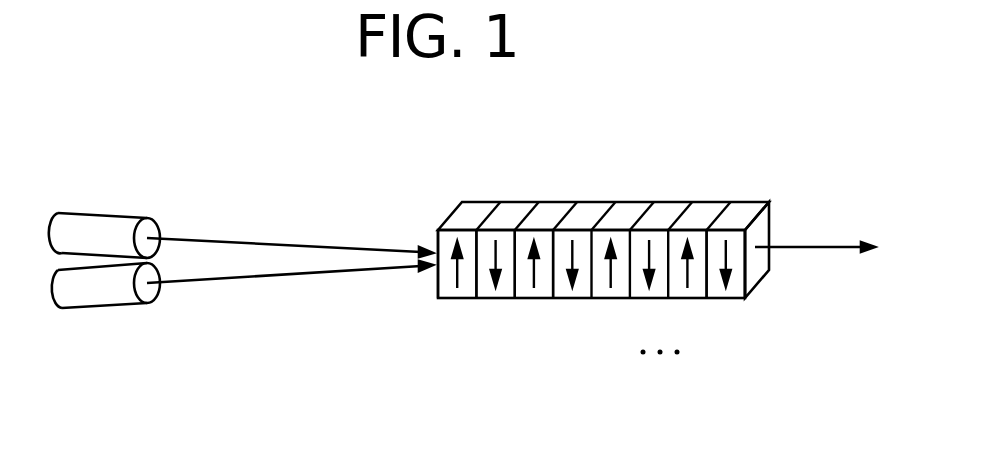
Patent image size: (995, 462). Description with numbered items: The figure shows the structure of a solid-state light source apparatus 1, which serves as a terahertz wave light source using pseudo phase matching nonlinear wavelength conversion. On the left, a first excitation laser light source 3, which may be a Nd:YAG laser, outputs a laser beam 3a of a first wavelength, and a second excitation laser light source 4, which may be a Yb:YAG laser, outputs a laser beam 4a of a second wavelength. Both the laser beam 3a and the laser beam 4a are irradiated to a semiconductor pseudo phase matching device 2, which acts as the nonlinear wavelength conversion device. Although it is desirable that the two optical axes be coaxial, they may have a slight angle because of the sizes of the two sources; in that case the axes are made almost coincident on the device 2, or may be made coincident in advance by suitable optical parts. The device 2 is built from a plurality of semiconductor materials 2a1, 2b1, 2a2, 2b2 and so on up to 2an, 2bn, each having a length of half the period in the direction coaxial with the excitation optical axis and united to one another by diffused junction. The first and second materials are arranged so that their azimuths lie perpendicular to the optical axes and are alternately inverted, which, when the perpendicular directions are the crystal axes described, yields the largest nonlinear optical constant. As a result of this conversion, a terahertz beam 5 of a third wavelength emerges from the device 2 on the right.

The solid-state light source apparatus 1 is at (543, 129).
The semiconductor pseudo phase matching device 2 is at (606, 313).
The semiconductor material 2a1 is at (458, 299).
The semiconductor material 2b1 is at (497, 299).
The semiconductor material 2a2 is at (532, 299).
The semiconductor material 2b2 is at (577, 299).
The semiconductor material 2an is at (690, 299).
The semiconductor material 2bn is at (759, 301).
The first excitation laser light source 3 is at (90, 230).
The laser beam 3a is at (212, 238).
The second excitation laser light source 4 is at (105, 287).
The laser beam 4a is at (215, 280).
The terahertz beam 5 is at (806, 247).